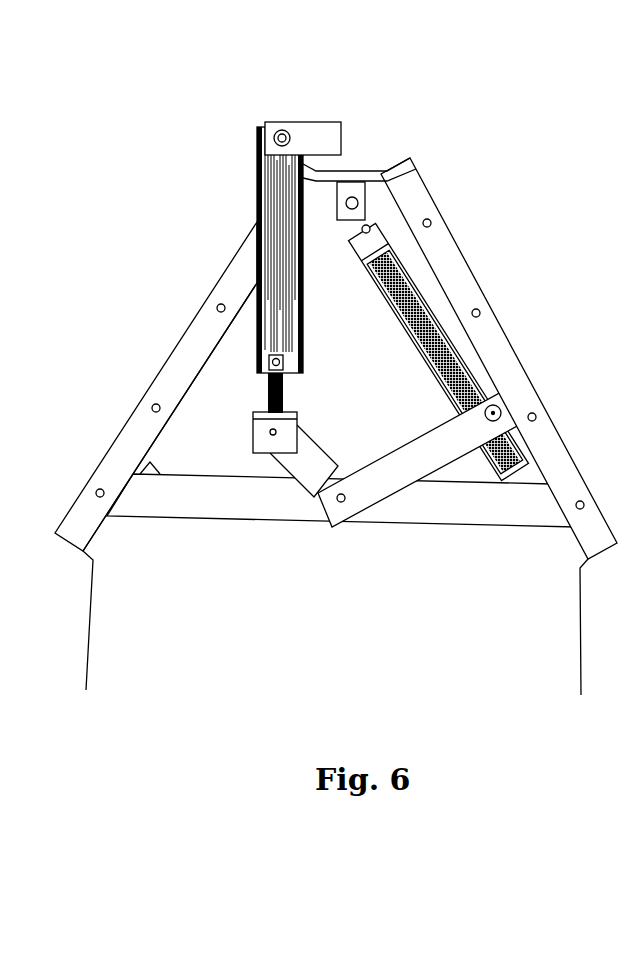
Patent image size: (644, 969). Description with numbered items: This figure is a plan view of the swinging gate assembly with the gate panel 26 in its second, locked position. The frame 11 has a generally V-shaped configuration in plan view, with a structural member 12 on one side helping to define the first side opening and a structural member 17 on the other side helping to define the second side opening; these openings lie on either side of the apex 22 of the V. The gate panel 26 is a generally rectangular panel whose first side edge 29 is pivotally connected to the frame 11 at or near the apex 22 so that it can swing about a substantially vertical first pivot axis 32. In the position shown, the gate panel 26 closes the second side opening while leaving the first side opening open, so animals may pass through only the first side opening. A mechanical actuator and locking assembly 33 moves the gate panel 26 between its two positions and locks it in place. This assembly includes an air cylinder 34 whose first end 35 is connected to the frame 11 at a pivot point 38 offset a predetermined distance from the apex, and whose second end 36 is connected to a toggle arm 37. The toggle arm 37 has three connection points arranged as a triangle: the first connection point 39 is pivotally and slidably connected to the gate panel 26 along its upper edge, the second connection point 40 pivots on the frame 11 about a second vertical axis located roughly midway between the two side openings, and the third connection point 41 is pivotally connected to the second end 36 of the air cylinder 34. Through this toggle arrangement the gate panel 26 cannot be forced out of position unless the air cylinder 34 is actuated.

The frame 11 is at (166, 375).
The structural member 12 is at (156, 456).
The structural member 17 is at (498, 342).
The apex 22 is at (389, 154).
The gate panel 26 is at (418, 275).
The first side edge 29 is at (372, 213).
The first pivot axis 32 is at (406, 164).
The mechanical actuator and locking assembly 33 is at (321, 523).
The air cylinder 34 is at (268, 260).
The first end 35 is at (279, 114).
The second end 36 is at (263, 474).
The toggle arm 37 is at (453, 486).
The pivot point 38 is at (286, 133).
The first connection point 39 is at (502, 411).
The second connection point 40 is at (342, 494).
The third connection point 41 is at (277, 431).